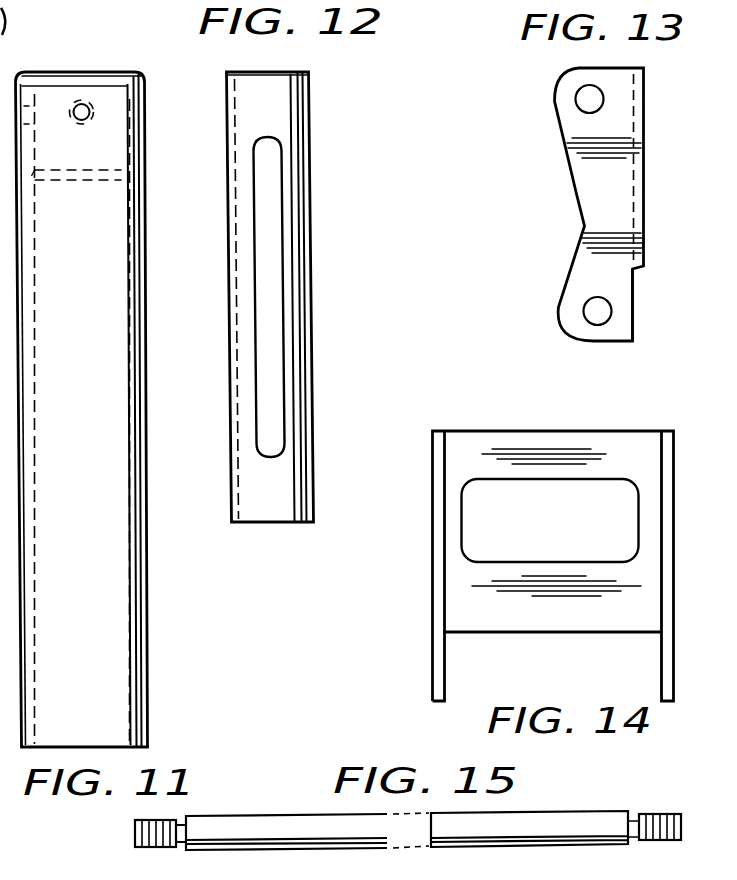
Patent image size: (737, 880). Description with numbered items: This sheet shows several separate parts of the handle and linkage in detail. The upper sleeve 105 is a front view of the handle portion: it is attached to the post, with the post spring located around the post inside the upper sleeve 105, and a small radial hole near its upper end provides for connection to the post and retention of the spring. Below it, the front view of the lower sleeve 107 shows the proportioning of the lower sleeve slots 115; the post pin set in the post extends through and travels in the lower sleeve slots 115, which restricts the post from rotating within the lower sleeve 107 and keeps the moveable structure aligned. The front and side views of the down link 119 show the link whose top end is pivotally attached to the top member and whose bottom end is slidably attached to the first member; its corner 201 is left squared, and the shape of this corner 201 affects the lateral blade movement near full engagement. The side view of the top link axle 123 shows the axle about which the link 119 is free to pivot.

In FIG. 11, the upper sleeve 105 is at (146, 633).
In FIG. 12, the lower sleeve 107 is at (298, 233).
In FIG. 12, the lower sleeve slots 115 is at (268, 283).
In FIG. 13, the first link 119 is at (568, 292).
In FIG. 14, the first link 119 is at (572, 406).
In FIG. 13, the corner 201 is at (631, 337).
In FIG. 15, the top link axle 123 is at (592, 810).